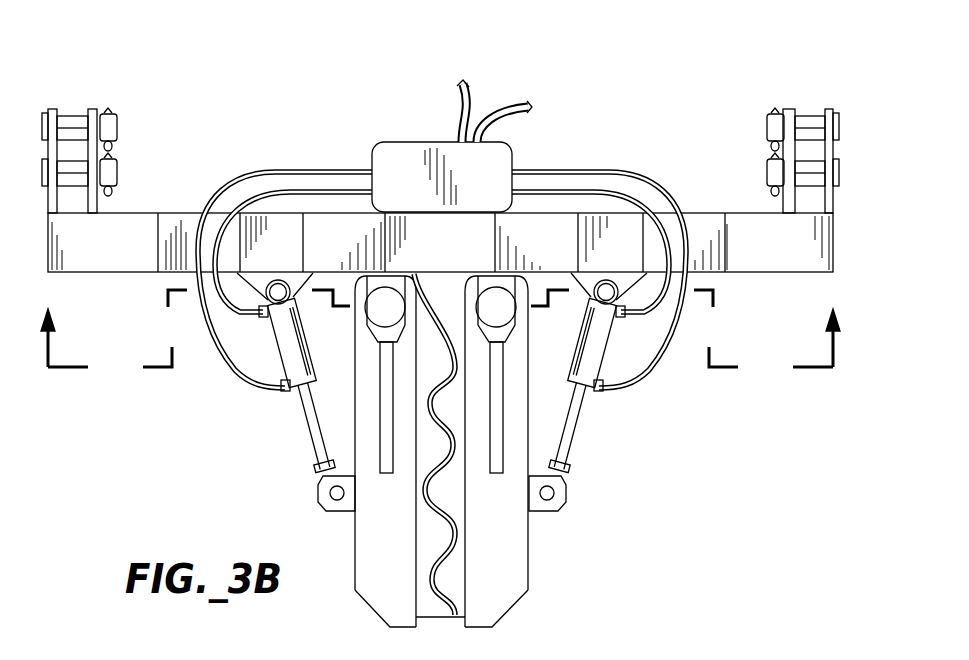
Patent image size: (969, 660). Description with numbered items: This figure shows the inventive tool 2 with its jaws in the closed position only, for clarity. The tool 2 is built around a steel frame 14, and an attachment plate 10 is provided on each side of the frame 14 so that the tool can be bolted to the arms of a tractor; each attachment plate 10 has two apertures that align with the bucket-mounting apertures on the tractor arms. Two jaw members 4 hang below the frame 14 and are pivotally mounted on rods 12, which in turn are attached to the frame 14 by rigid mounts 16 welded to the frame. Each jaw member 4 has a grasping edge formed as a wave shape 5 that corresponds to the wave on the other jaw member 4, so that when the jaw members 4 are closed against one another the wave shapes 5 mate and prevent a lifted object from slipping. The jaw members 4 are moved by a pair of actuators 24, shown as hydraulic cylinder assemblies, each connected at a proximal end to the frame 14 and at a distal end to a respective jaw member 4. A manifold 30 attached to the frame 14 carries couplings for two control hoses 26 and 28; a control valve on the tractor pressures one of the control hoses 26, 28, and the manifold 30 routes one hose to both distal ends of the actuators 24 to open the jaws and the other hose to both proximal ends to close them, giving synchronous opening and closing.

The tool 2 is at (444, 353).
The jaw members 4 is at (387, 598).
The wave shape 5 is at (438, 451).
The attachment plate 10 is at (835, 150).
The rods 12 is at (383, 312).
The frame 14 is at (783, 253).
The rigid mounts 16 is at (363, 328).
The actuators 24 is at (282, 365).
The control hose 26 is at (458, 92).
The control hose 28 is at (507, 117).
The manifold 30 is at (376, 160).